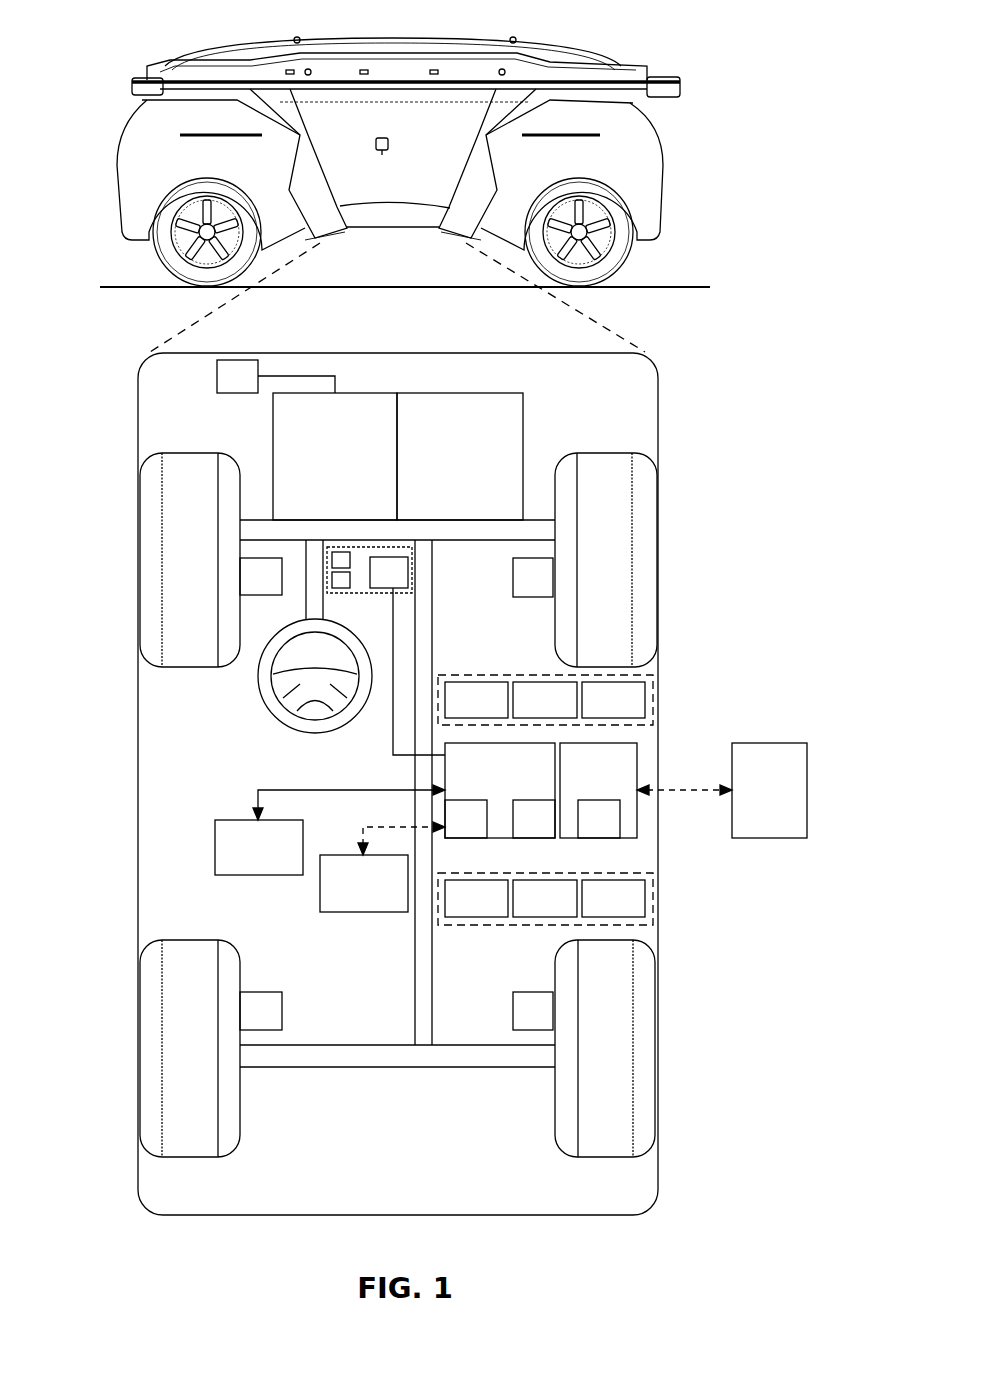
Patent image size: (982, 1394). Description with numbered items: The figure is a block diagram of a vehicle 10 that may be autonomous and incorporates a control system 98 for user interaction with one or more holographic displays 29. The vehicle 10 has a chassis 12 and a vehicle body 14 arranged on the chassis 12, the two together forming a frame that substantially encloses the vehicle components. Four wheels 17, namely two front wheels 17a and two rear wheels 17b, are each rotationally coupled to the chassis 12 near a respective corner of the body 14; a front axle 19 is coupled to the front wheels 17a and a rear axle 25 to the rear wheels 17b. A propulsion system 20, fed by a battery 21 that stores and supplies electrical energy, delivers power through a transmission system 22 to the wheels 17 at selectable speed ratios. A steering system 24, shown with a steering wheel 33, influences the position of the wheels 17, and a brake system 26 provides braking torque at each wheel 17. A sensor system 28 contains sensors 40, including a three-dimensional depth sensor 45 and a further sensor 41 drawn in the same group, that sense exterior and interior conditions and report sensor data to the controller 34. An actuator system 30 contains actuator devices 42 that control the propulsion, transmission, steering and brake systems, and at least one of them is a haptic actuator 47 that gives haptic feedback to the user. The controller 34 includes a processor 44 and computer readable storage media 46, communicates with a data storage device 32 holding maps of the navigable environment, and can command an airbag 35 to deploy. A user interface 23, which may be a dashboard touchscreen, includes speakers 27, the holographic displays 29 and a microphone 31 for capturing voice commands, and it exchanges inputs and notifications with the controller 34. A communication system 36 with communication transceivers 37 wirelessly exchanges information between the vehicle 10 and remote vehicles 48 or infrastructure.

The vehicle 10 is at (590, 52).
The chassis 12 is at (415, 948).
The vehicle body 14 is at (138, 757).
The wheels 17 is at (404, 790).
The front wheels 17a is at (150, 560).
The rear wheels 17b is at (148, 1048).
The front axle 19 is at (498, 545).
The propulsion system 20 is at (318, 451).
The battery 21 is at (237, 358).
The transmission system 22 is at (443, 451).
The user interface 23 is at (333, 549).
The steering system 24 is at (333, 603).
The rear axle 25 is at (458, 1045).
The brake system 26 is at (245, 591).
The speakers 27 is at (340, 548).
The sensor system 28 is at (545, 681).
The holographic displays 29 is at (330, 580).
The actuator system 30 is at (545, 919).
The microphone 31 is at (374, 587).
The data storage device 32 is at (348, 897).
The steering wheel 33 is at (258, 670).
The controller 34 is at (500, 790).
The airbag 35 is at (242, 862).
The communication system 36 is at (598, 790).
The communication transceivers 37 is at (583, 834).
The sensors 40 is at (460, 714).
The radar 41 is at (598, 714).
The actuator devices 42 is at (460, 912).
The processor 44 is at (450, 834).
The three-dimensional depth sensor 45 is at (529, 714).
The computer readable storage device or media 46 is at (518, 834).
The haptic actuator 47 is at (598, 912).
The remote vehicles 48 is at (753, 803).
The control system 98 is at (372, 775).